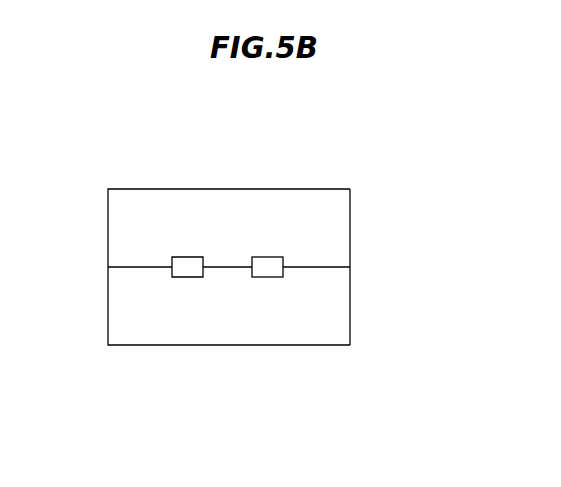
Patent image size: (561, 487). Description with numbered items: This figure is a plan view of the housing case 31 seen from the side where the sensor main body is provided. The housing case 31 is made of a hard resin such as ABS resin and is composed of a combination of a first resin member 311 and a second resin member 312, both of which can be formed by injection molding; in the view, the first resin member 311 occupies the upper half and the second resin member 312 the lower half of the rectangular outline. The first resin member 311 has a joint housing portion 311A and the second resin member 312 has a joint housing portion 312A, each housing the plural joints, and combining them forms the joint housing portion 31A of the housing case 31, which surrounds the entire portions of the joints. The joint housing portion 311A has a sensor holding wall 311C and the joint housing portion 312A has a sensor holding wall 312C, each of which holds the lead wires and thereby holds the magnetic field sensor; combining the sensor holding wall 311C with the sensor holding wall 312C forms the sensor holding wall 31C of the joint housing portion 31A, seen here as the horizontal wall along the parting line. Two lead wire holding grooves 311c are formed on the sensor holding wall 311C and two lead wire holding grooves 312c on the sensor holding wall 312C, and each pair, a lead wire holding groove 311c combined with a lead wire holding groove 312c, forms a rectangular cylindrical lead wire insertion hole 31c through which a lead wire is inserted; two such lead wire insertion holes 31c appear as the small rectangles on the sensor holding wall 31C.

The housing case 31 is at (232, 150).
The first resin member 311 is at (133, 187).
The second resin member 312 is at (131, 348).
The joint housing portion 31A is at (368, 172).
The joint housing portion 311A is at (298, 210).
The joint housing portion 312A is at (318, 283).
The sensor holding wall 31C is at (357, 400).
The sensor holding wall 311C is at (297, 258).
The sensor holding wall 312C is at (286, 310).
The lead wire insertion hole 31c is at (267, 257).
The lead wire holding groove 311c is at (189, 258).
The lead wire holding groove 312c is at (177, 275).